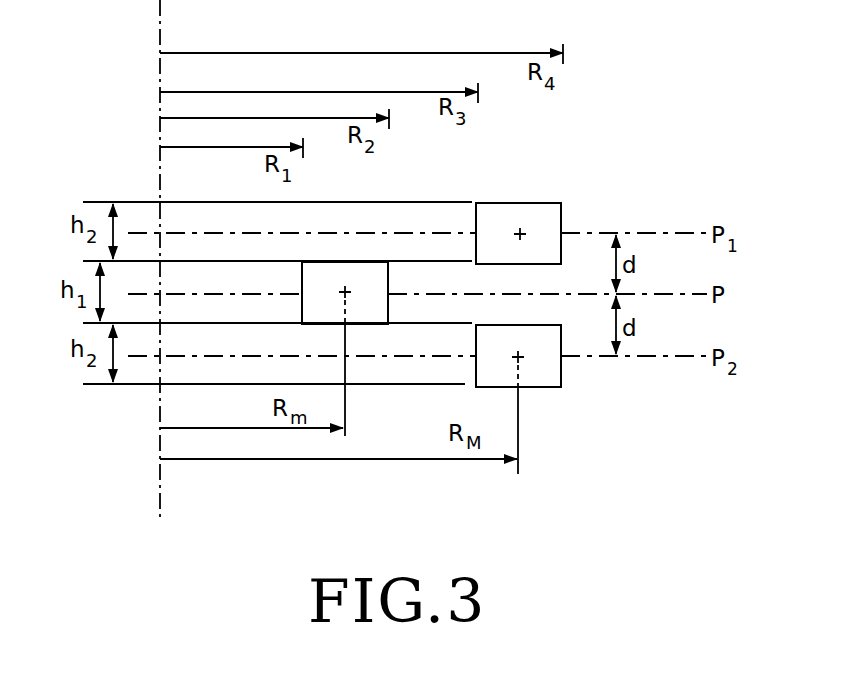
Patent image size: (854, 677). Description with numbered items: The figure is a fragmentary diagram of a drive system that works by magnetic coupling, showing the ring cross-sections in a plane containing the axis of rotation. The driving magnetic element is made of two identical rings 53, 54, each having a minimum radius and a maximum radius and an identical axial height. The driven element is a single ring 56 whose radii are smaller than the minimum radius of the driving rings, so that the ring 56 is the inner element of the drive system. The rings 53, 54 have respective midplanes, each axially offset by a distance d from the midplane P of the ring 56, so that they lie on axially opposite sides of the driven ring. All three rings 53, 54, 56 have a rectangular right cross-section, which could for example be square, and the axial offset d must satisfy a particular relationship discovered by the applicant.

The ring 53 is at (561, 207).
The ring 54 is at (561, 372).
The ring 56 is at (388, 306).